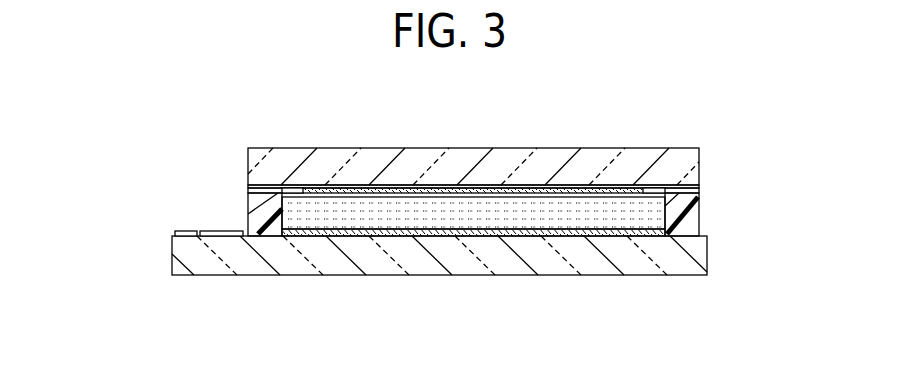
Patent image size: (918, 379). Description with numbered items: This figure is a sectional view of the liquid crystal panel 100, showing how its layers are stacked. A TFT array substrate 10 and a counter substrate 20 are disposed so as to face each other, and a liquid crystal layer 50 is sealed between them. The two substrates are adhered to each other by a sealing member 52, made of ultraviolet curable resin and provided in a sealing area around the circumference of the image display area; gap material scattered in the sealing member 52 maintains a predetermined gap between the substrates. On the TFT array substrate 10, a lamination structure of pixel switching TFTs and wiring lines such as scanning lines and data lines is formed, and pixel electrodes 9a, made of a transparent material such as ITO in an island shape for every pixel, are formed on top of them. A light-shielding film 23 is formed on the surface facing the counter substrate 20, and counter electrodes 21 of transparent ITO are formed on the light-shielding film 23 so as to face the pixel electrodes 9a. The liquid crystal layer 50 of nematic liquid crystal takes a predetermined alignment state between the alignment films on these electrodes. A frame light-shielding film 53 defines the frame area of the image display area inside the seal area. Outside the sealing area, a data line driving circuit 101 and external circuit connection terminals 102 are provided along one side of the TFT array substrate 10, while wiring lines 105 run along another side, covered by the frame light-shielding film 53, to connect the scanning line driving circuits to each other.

The liquid crystal panel 100 is at (702, 112).
The counter substrate 20 is at (386, 165).
The counter electrodes 21 is at (592, 185).
The light-shielding film 23 is at (459, 188).
The frame light-shielding film 53 is at (288, 188).
The sealing member 52 is at (248, 200).
The liquid crystal layer 50 is at (417, 215).
The pixel electrodes 9a is at (330, 236).
The TFT array substrate 10 is at (500, 263).
The data line driving circuit 101 is at (222, 232).
The external circuit connection terminals 102 is at (178, 231).
The wiring lines 105 is at (650, 237).